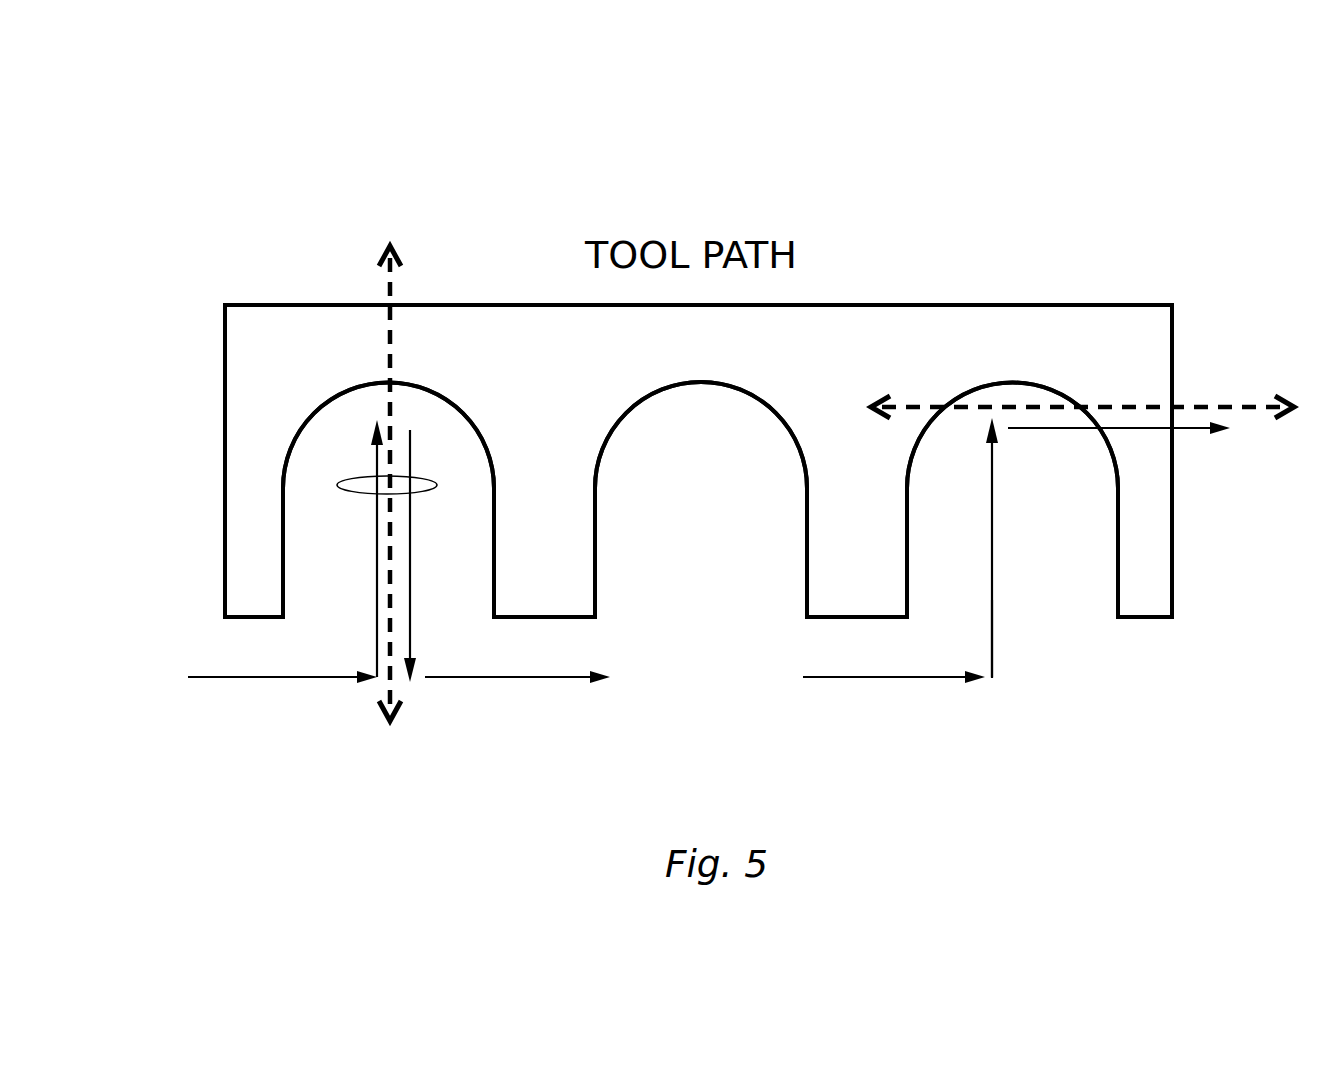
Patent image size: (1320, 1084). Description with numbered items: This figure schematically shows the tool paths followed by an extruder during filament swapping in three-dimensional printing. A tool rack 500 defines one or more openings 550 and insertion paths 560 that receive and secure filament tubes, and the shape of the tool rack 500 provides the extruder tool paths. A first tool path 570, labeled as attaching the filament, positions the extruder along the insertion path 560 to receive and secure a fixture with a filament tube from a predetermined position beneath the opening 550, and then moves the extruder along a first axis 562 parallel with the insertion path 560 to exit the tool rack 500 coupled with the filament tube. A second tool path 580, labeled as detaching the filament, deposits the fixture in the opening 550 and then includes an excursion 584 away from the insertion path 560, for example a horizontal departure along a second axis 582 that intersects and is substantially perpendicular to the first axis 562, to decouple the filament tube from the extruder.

The tool rack 500 is at (248, 165).
The opening 550 is at (481, 591).
The insertion path 560 is at (337, 485).
The first axis 562 is at (392, 283).
The first tool path 570 is at (210, 714).
The second tool path 580 is at (806, 690).
The second axis 582 is at (1200, 405).
The excursion 584 is at (1049, 432).